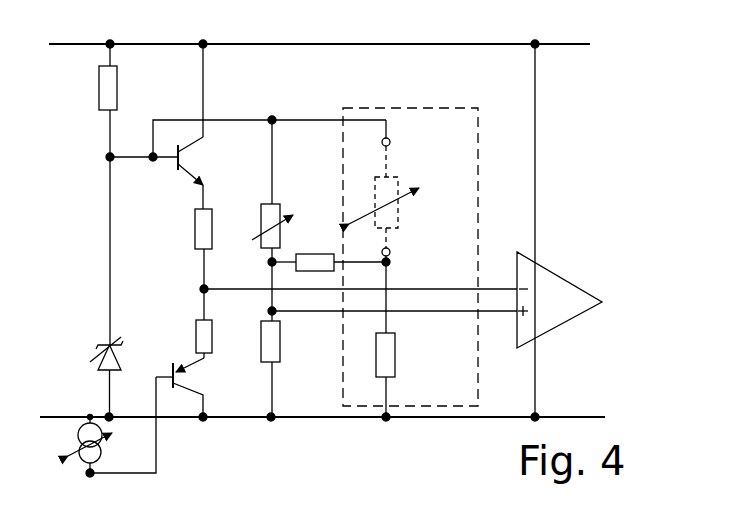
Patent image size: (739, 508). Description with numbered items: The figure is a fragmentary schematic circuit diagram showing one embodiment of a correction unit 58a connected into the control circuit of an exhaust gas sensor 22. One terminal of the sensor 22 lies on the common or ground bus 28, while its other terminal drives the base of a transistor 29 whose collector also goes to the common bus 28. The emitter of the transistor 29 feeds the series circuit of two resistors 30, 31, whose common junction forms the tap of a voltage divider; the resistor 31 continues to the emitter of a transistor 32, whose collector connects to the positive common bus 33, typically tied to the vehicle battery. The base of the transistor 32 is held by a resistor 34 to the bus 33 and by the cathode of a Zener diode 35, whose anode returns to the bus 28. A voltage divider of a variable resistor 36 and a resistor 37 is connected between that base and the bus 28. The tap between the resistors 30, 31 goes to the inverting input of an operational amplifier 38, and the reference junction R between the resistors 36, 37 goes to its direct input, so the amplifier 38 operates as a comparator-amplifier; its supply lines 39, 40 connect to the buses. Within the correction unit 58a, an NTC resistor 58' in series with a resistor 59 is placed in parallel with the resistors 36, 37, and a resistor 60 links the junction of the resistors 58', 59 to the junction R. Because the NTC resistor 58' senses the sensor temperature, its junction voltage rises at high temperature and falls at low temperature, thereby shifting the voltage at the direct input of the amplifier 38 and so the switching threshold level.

The sensor 22 is at (102, 455).
The common bus 28 is at (302, 419).
The transistor 29 is at (192, 371).
The resistor 30 is at (212, 327).
The resistor 31 is at (219, 235).
The transistor 32 is at (185, 155).
The positive common bus 33 is at (331, 44).
The resistor 34 is at (107, 91).
The Zener diode 35 is at (115, 350).
The variable resistor 36 is at (282, 230).
The resistor 37 is at (283, 340).
The operational amplifier 38 is at (572, 322).
The power supply line 39 is at (535, 153).
The power supply line 40 is at (535, 388).
The NTC resistor 58' is at (413, 191).
The correction unit 58a is at (458, 255).
The resistor 59 is at (396, 372).
The resistor 60 is at (325, 264).
The reference junction R is at (268, 263).